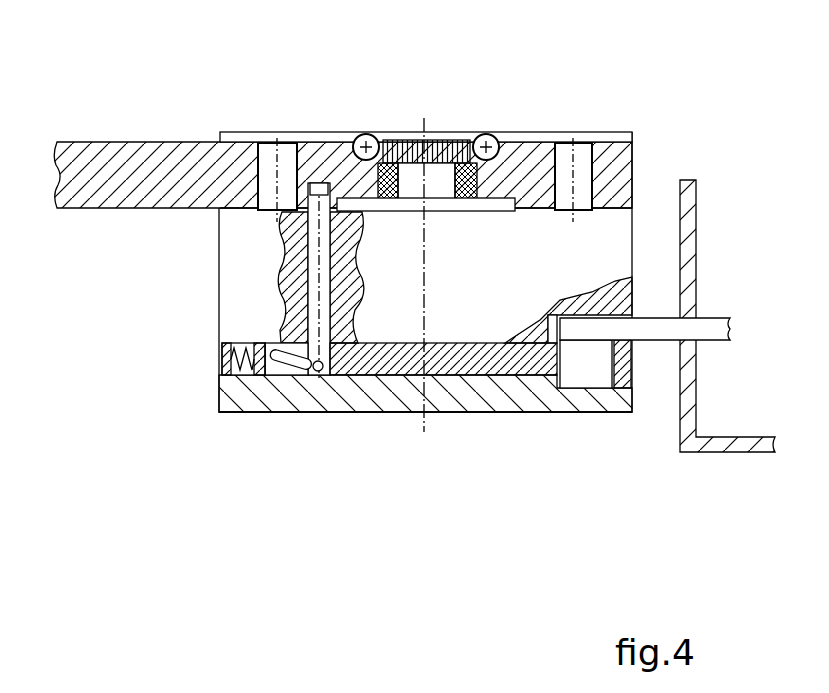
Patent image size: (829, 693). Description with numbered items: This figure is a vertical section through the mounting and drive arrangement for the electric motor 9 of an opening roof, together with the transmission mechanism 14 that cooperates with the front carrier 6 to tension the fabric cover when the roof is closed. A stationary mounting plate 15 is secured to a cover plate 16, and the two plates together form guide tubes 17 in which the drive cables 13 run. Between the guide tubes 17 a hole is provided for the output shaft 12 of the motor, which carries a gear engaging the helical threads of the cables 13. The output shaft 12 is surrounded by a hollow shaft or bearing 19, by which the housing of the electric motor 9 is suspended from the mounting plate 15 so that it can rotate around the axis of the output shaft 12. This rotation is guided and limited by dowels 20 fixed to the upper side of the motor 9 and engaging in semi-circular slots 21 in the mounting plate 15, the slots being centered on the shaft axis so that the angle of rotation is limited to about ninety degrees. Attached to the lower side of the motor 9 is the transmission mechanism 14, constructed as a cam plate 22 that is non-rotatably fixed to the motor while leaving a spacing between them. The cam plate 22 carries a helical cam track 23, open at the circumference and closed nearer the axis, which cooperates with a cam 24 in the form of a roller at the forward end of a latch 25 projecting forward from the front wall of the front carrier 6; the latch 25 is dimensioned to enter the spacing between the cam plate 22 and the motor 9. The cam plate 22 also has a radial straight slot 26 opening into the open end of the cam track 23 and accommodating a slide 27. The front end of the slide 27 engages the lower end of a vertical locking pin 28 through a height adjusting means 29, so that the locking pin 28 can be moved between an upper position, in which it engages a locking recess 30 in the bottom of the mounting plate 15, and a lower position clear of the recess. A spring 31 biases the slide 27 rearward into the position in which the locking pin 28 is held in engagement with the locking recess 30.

The front carrier 6 is at (690, 262).
The electric motor 9 is at (230, 308).
The output shaft 12 is at (458, 190).
The drive cables 13 is at (366, 134).
The transmission mechanism 14 is at (185, 358).
The mounting plate 15 is at (153, 142).
The cover plate 16 is at (625, 130).
The guide tubes 17 is at (385, 150).
The hollow shaft or bearing 19 is at (432, 175).
The dowels 20 is at (290, 178).
The semi-circular slots 21 is at (268, 160).
The cam plate 22 is at (458, 398).
The cam track 23 is at (582, 388).
The cam 24 is at (594, 378).
The latch 25 is at (656, 332).
The radial straight slot 26 is at (400, 365).
The slide 27 is at (515, 368).
The locking pin 28 is at (313, 288).
The height adjusting means 29 is at (297, 364).
The locking recess 30 is at (318, 186).
The spring 31 is at (240, 360).